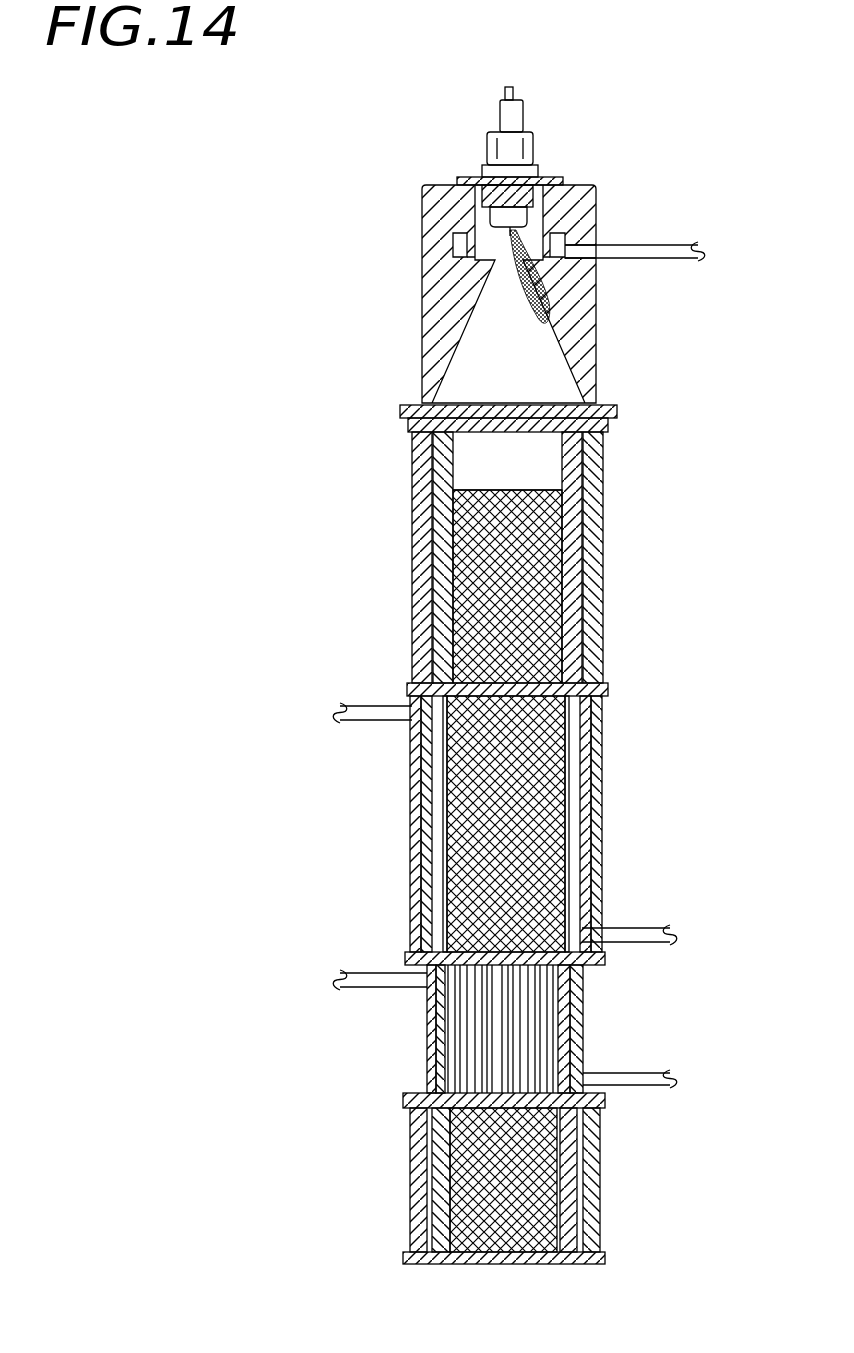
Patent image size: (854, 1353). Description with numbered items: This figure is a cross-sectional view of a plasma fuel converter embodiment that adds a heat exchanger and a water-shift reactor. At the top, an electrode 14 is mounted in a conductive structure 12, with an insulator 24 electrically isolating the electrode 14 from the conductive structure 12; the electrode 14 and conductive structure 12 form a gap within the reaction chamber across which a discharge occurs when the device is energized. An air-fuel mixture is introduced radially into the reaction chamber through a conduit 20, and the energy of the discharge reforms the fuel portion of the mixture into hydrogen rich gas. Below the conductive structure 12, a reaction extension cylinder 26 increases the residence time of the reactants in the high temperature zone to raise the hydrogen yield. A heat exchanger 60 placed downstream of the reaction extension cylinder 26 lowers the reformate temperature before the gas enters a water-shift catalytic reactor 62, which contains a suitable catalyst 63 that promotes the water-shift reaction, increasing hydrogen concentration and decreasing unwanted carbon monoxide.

The electrode 14 is at (510, 86).
The insulator 24 is at (530, 148).
The conductive structure 12 is at (422, 264).
The conduit 20 is at (668, 245).
The reaction extension cylinder 26 is at (412, 520).
The heat exchanger 60 is at (462, 1064).
The water-shift catalytic reactor 62 is at (410, 1137).
The catalyst 63 is at (600, 1184).